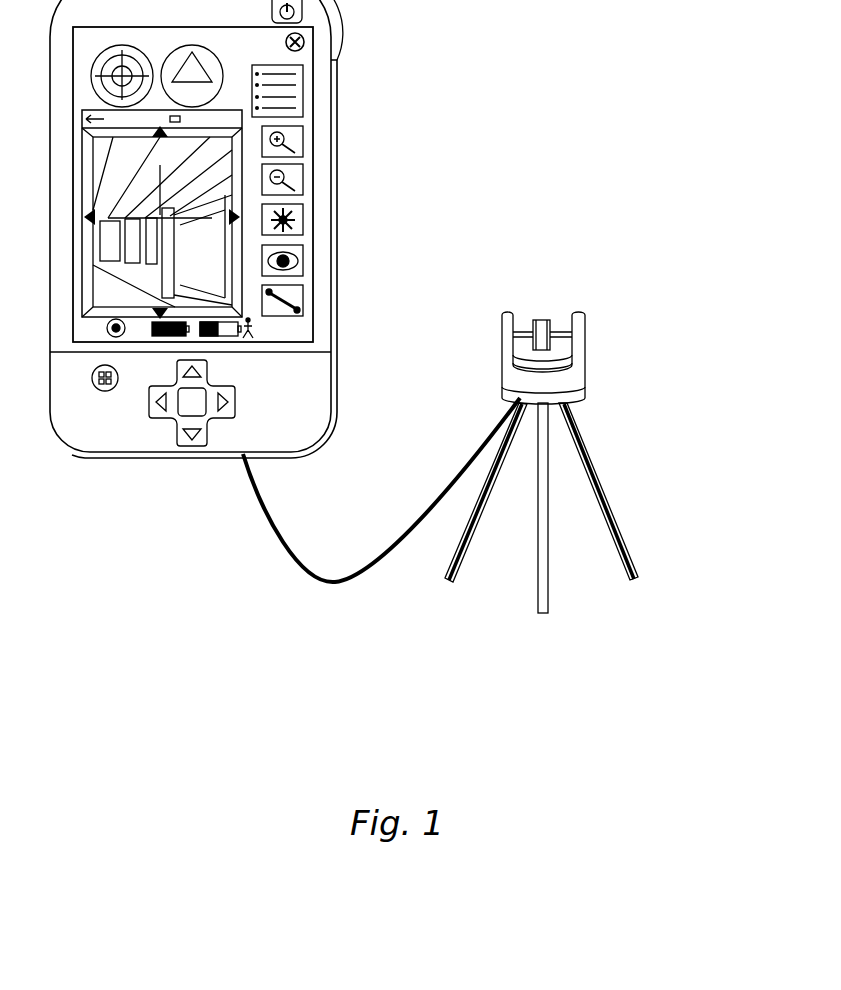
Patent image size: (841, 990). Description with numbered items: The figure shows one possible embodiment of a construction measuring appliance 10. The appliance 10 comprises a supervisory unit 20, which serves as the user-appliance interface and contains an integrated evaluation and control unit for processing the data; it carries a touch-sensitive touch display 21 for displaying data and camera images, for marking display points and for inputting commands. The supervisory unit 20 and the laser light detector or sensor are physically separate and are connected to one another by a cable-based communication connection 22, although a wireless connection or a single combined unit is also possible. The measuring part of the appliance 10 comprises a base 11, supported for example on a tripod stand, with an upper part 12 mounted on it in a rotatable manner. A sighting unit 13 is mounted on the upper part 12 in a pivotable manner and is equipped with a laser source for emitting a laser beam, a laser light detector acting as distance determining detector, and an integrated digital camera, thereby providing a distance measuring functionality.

The construction measuring appliance 10 is at (624, 102).
The base 11 is at (573, 392).
The upper part 12 is at (510, 357).
The sighting unit 13 is at (545, 333).
The supervisory unit 20 is at (371, 76).
The touch display 21 is at (135, 290).
The communication connection 22 is at (323, 582).